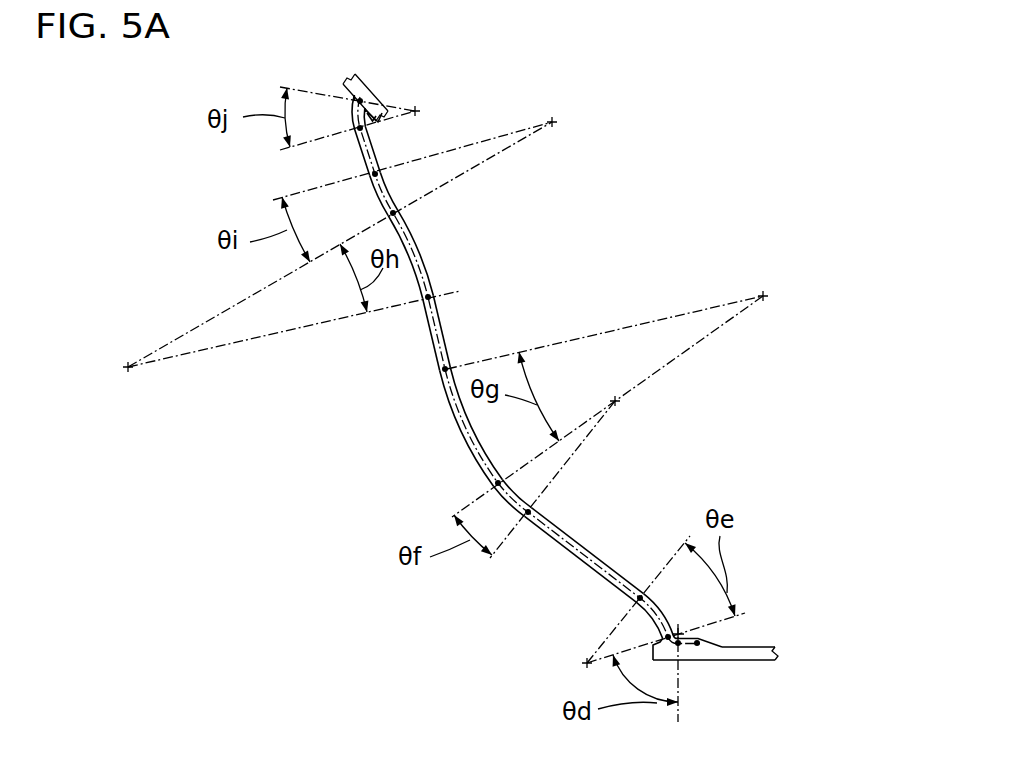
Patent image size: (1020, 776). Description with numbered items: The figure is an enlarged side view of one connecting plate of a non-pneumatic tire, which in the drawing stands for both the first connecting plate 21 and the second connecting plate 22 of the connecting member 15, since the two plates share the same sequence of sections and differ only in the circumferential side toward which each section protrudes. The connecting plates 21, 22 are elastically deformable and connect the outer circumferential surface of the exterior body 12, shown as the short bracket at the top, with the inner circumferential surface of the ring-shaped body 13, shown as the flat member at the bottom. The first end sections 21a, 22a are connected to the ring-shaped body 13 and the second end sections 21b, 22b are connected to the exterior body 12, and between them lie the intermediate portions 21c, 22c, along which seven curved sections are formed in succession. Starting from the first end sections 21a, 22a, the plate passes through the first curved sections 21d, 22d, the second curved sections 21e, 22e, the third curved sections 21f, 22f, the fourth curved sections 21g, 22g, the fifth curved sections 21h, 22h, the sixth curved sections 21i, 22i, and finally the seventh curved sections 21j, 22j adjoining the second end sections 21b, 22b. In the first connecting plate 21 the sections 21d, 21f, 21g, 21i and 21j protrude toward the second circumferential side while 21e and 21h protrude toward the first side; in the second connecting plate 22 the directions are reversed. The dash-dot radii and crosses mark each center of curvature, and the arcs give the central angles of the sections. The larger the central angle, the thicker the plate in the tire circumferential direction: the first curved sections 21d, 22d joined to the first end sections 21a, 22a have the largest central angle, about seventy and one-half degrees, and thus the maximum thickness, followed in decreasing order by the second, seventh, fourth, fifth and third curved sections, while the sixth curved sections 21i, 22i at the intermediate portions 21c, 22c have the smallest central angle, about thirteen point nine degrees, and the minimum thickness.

The exterior body 12 is at (375, 80).
The ring-shaped body 13 is at (762, 661).
The connecting member 15 is at (530, 263).
The first connecting plate 21 is at (528, 356).
The second connecting plate 22 is at (528, 356).
The first end section 21a is at (764, 631).
The first end section 22a is at (700, 640).
The second end section 21b is at (296, 87).
The second end section 22b is at (354, 98).
The intermediate portion 21c is at (515, 332).
The intermediate portion 22c is at (453, 347).
The first curved section 21d is at (756, 607).
The first curved section 22d is at (680, 633).
The second curved section 21e is at (564, 572).
The second curved section 22e is at (637, 604).
The third curved section 21f is at (584, 495).
The third curved section 22f is at (508, 492).
The fourth curved section 21g is at (401, 427).
The fourth curved section 22g is at (455, 422).
The fifth curved section 21h is at (474, 248).
The fifth curved section 22h is at (420, 250).
The sixth curved section 21i is at (445, 154).
The sixth curved section 22i is at (379, 172).
The seventh curved section 21j is at (280, 141).
The seventh curved section 22j is at (354, 130).